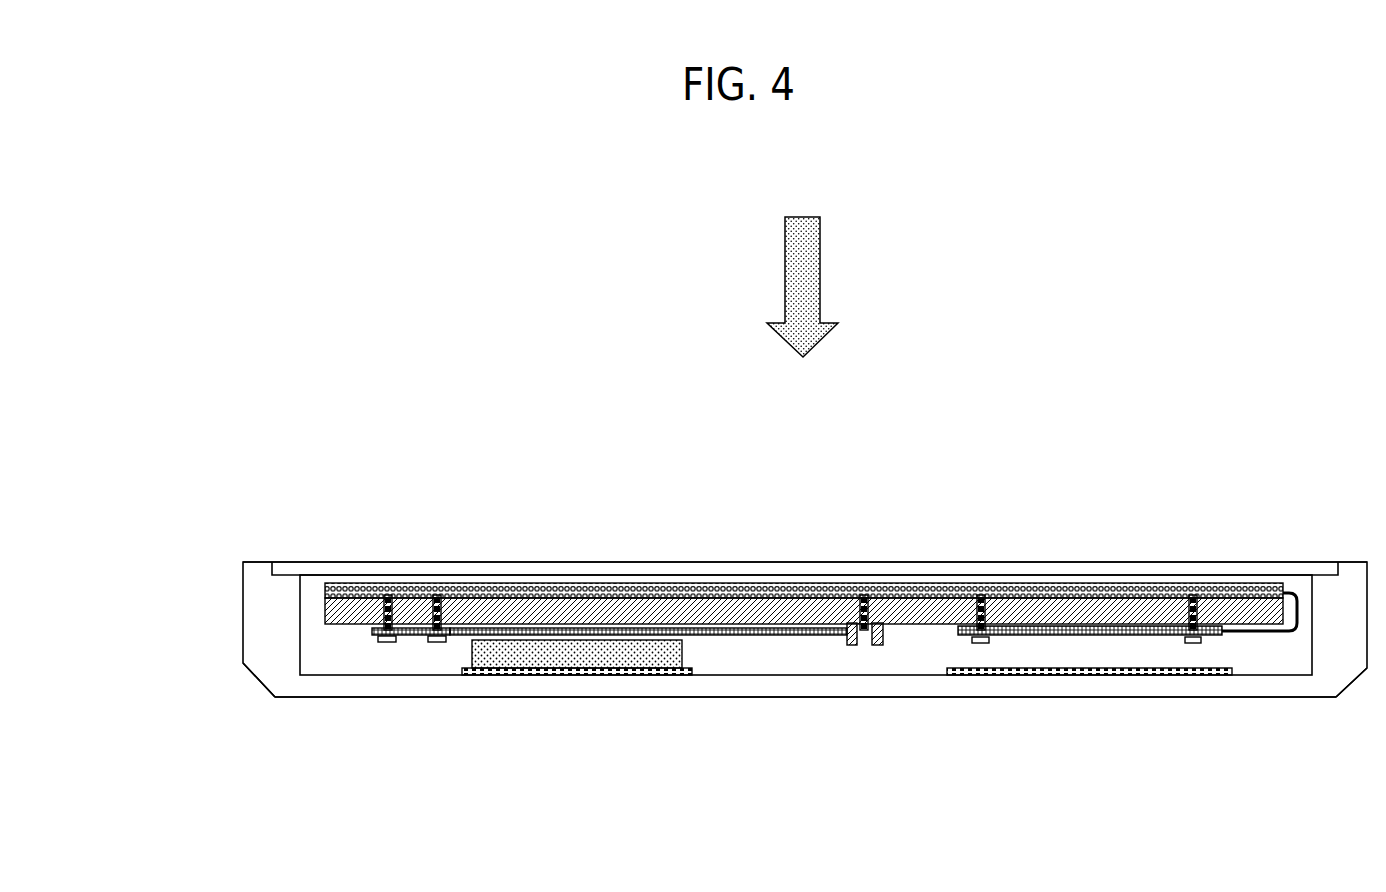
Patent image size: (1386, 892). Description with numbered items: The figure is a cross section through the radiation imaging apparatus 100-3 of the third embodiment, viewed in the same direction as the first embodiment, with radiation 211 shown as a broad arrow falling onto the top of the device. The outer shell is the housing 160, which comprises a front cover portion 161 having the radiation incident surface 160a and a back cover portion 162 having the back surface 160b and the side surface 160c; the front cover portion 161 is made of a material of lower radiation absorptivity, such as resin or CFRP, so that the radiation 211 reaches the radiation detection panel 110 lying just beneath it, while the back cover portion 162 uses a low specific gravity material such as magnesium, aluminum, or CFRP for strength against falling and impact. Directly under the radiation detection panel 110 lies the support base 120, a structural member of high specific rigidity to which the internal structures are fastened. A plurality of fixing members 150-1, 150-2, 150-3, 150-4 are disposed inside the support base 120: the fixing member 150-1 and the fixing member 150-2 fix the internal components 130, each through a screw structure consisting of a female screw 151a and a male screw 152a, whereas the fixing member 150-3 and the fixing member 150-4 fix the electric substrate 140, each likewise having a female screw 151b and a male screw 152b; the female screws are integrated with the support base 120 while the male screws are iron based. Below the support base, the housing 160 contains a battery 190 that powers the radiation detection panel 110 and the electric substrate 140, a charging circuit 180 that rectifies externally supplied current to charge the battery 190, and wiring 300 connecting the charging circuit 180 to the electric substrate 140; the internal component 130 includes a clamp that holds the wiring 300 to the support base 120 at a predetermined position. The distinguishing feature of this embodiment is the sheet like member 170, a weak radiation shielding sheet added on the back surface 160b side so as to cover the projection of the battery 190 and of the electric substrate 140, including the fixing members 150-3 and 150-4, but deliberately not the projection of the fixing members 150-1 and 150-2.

The radiation 211 is at (797, 283).
The radiation imaging apparatus 100-3 is at (416, 452).
The housing 160 is at (738, 626).
The radiation incident surface 160a is at (500, 560).
The back surface 160b is at (323, 698).
The side surface 160c is at (285, 668).
The front cover portion 161 is at (287, 568).
The back cover portion 162 is at (277, 623).
The radiation detection panel 110 is at (1028, 590).
The support base 120 is at (930, 613).
The internal component 130 is at (850, 636).
The electric substrate 140 is at (1062, 632).
The sheet like member 170 is at (623, 672).
The charging circuit 180 is at (380, 633).
The battery 190 is at (553, 657).
The wiring 300 is at (787, 631).
The fixing member 150-1 is at (177, 458).
The fixing member 150-2 is at (618, 462).
The fixing member 150-3 is at (840, 470).
The fixing member 150-4 is at (1053, 470).
The female screw 151a is at (430, 589).
The male screw 152a is at (431, 615).
The female screw 151b is at (971, 592).
The male screw 152b is at (971, 620).